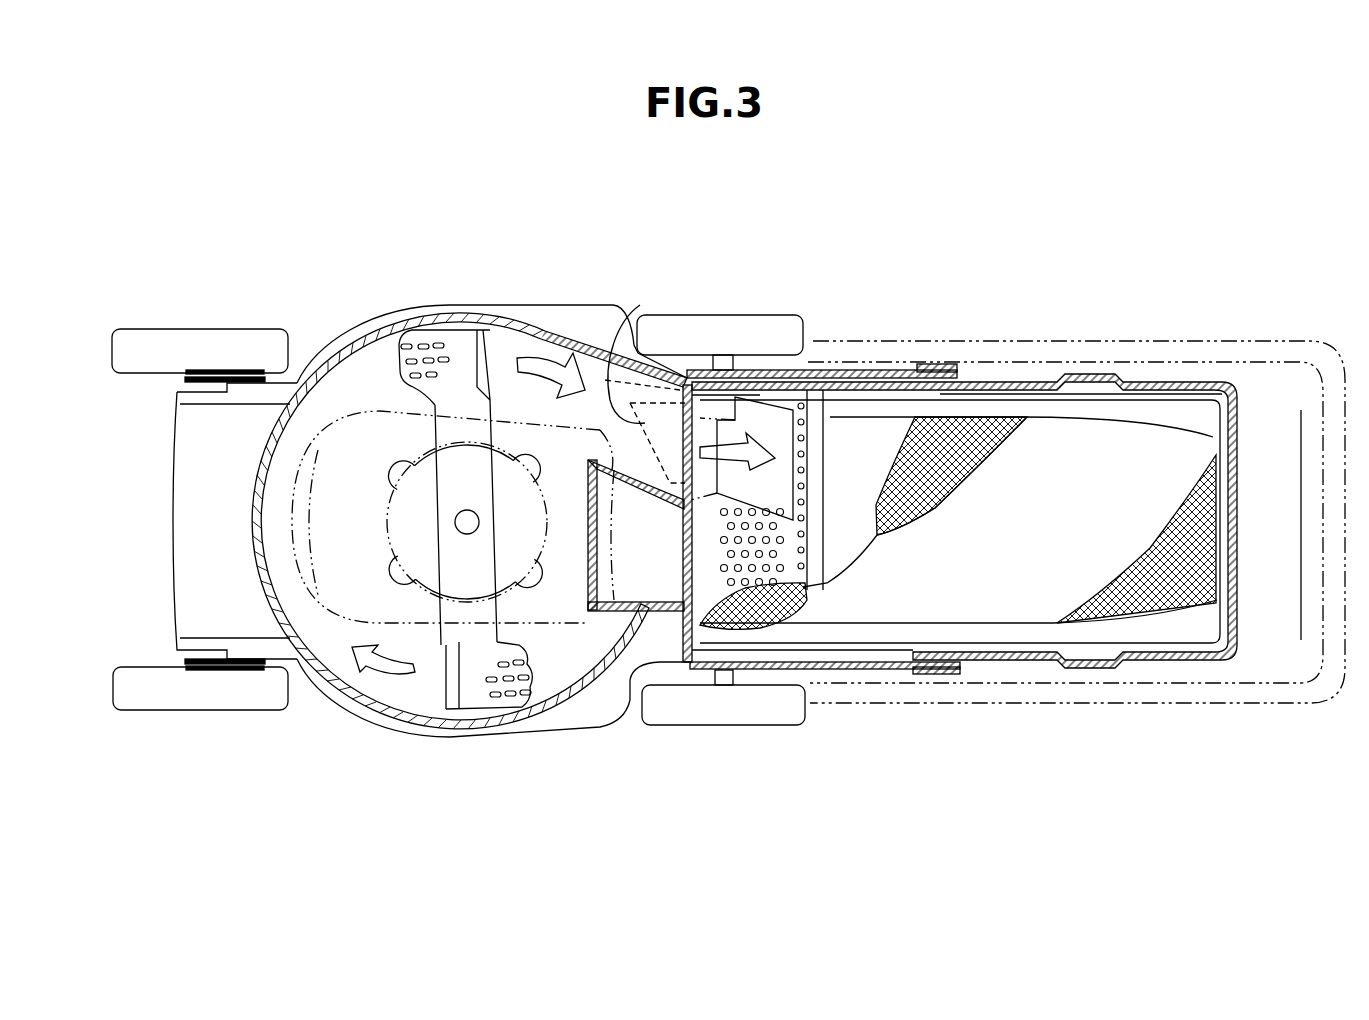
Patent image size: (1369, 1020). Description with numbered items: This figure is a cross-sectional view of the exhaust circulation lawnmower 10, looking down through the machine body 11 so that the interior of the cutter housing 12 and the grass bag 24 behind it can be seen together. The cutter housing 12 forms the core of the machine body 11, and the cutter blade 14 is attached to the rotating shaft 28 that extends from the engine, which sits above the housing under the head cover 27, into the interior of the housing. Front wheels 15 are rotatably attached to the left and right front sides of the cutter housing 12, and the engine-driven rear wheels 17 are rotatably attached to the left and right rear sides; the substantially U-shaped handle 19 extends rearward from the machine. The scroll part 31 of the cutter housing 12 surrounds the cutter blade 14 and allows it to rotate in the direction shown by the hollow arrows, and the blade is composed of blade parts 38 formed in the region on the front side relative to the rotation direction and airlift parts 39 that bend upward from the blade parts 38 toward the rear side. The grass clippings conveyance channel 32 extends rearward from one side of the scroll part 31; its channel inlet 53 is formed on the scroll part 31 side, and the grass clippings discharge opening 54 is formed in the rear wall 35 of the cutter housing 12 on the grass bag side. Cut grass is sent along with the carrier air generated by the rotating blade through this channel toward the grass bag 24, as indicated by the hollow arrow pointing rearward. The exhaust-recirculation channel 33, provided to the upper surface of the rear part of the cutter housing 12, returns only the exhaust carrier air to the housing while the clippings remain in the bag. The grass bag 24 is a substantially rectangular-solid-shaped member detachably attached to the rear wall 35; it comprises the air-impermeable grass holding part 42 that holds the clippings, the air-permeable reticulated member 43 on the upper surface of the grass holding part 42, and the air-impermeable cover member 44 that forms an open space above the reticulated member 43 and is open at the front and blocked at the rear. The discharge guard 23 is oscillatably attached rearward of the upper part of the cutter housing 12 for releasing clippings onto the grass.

The exhaust circulation lawnmower 10 is at (165, 92).
The machine body 11 is at (268, 263).
The cutter housing 12 is at (377, 306).
The cutter blade 14 is at (453, 337).
The front wheels 15 is at (205, 329).
The rear wheels 17 is at (718, 315).
The handle 19 is at (1103, 341).
The discharge guard 23 is at (855, 374).
The grass bag 24 is at (1173, 376).
The head cover 27 is at (385, 412).
The rotating shaft 28 is at (455, 522).
The scroll part 31 is at (383, 685).
The grass clippings conveyance channel 32 is at (772, 410).
The exhaust-recirculation channel 33 is at (628, 582).
The rear wall 35 is at (790, 574).
The blade parts 38 is at (508, 324).
The airlift parts 39 is at (428, 340).
The grass holding part 42 is at (1202, 415).
The reticulated member 43 is at (990, 420).
The cover member 44 is at (1182, 362).
The channel inlet 53 is at (640, 305).
The grass clippings discharge opening 54 is at (803, 400).